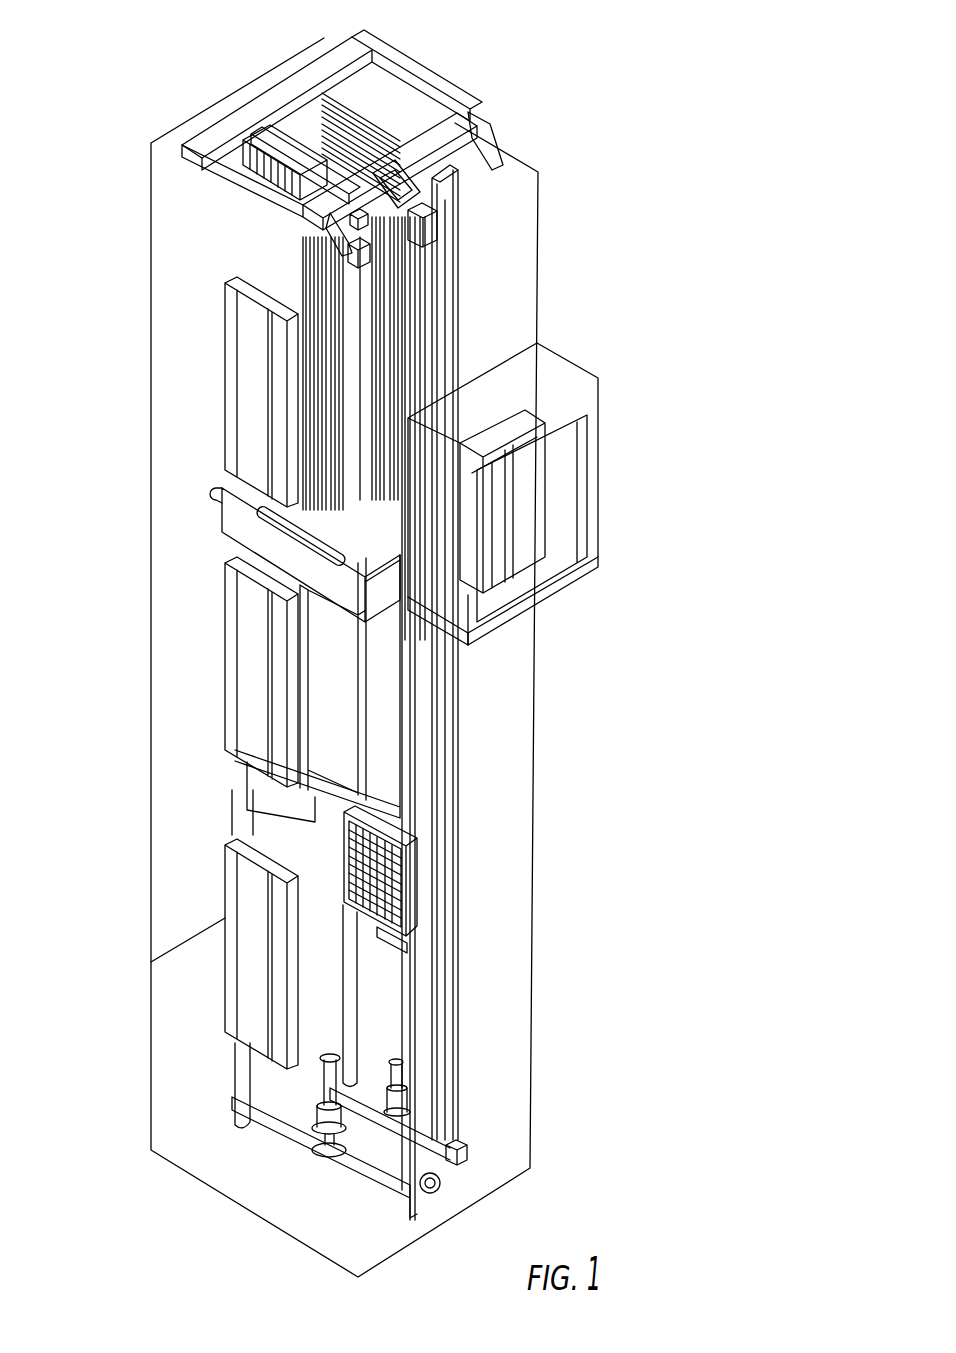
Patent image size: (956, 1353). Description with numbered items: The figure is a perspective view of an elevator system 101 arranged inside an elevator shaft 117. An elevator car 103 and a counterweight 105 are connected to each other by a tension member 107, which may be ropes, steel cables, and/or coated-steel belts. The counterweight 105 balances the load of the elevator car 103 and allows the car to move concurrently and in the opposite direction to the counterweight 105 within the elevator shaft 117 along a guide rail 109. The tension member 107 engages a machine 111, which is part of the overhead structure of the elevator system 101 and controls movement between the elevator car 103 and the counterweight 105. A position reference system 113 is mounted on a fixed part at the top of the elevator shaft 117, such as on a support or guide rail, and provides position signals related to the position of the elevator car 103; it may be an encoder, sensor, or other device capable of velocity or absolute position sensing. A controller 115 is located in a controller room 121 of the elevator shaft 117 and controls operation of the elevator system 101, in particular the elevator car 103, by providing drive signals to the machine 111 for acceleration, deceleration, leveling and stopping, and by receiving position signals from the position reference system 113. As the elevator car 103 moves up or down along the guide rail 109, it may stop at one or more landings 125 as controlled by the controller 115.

The elevator system 101 is at (560, 64).
The elevator car 103 is at (343, 700).
The counterweight 105 is at (393, 890).
The tension member 107 is at (347, 385).
The guide rail 109 is at (430, 813).
The machine 111 is at (255, 137).
The position reference system 113 is at (428, 230).
The controller 115 is at (538, 510).
The elevator shaft 117 is at (205, 818).
The controller room 121 is at (603, 380).
The landings 125 is at (225, 385).